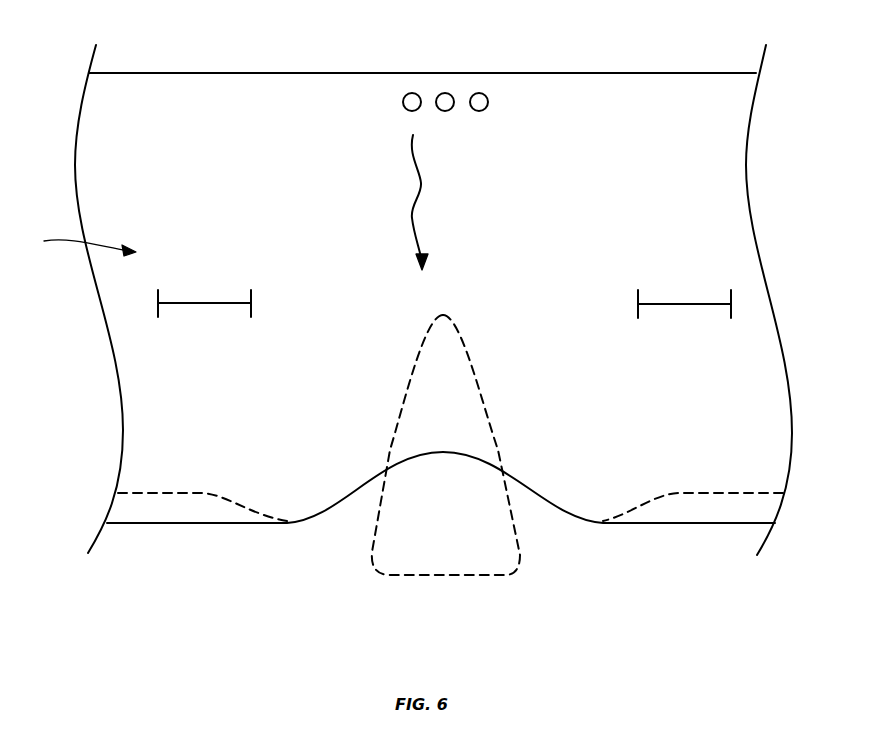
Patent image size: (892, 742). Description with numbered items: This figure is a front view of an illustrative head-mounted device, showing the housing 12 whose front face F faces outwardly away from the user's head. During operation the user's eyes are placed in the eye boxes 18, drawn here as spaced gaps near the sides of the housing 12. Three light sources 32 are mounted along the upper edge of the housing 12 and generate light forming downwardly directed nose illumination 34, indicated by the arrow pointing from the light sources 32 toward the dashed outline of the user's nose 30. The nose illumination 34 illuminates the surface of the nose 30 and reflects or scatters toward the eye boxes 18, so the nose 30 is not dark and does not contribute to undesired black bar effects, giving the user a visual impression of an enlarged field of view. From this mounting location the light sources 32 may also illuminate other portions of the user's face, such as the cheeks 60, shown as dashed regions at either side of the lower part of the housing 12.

The housing 12 is at (683, 523).
The eye boxes 18 is at (251, 308).
The nose 30 is at (400, 575).
The light sources 32 is at (412, 92).
The nose illumination 34 is at (421, 183).
The cheeks 60 is at (147, 493).
The front face F is at (81, 245).